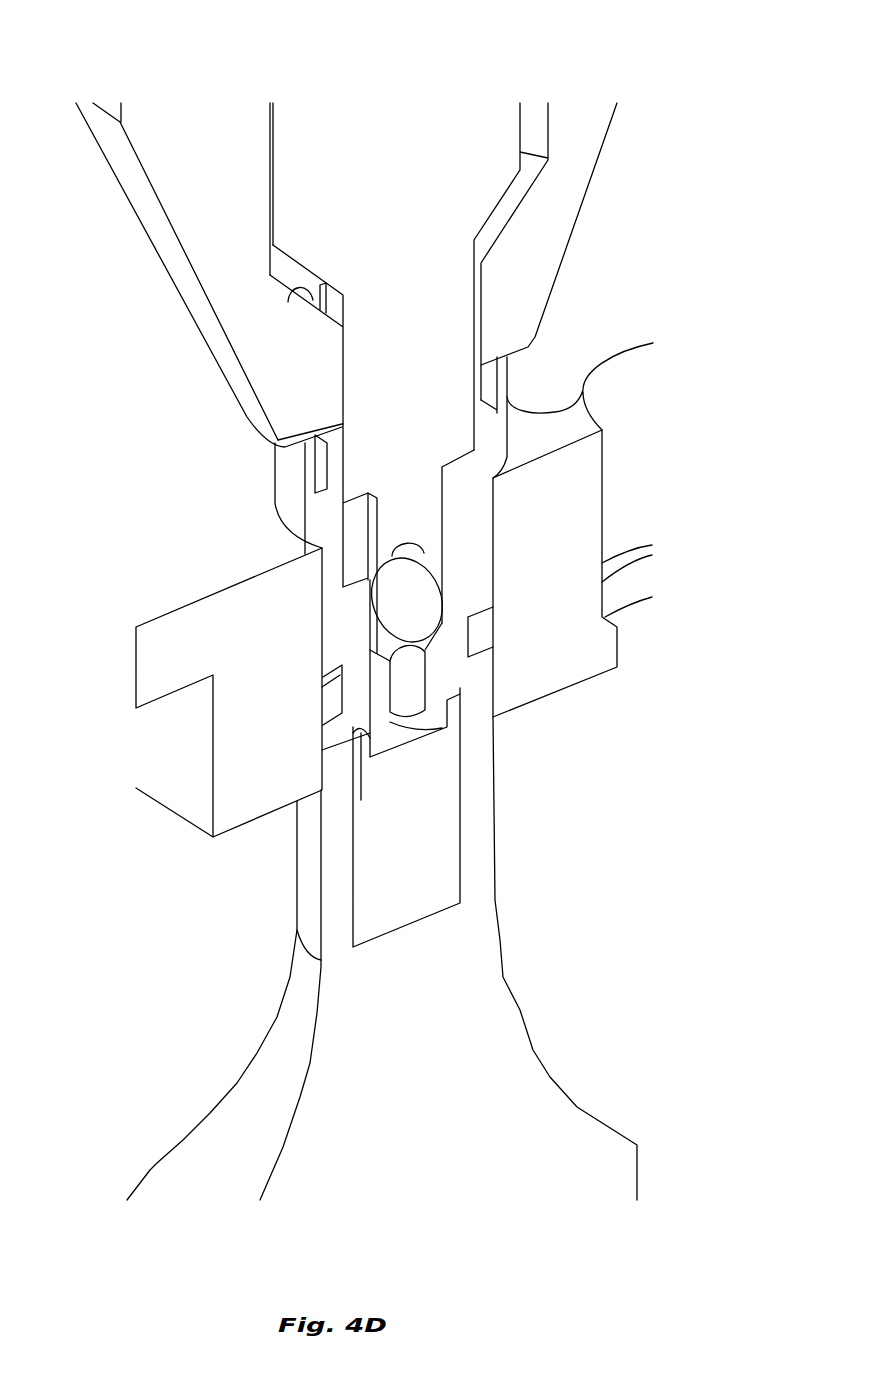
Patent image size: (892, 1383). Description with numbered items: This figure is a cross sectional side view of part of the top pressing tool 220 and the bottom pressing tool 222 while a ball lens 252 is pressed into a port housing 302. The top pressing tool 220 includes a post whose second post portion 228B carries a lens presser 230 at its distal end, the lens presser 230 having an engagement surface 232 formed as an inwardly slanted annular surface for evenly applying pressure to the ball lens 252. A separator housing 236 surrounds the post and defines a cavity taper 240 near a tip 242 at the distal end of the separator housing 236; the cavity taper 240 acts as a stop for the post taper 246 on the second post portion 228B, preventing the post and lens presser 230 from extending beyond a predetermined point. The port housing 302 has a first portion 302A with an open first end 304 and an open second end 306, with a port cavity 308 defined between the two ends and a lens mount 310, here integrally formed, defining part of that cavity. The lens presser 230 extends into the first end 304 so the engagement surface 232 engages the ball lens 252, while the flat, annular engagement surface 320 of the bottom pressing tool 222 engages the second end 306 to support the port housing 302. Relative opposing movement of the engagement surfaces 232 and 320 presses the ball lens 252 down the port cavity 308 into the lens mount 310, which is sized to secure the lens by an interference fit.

The top pressing tool 220 is at (255, 116).
The second post portion 228B is at (387, 323).
The cavity taper 240 is at (290, 290).
The post taper 246 is at (270, 275).
The open first end 304 is at (308, 452).
The lens presser 230 is at (352, 521).
The engagement surface 232 is at (443, 577).
The ball lens 252 is at (393, 603).
The lens mount 310 is at (368, 617).
The port cavity 308 is at (410, 682).
The open second end 306 is at (361, 735).
The engagement surface 320 is at (473, 690).
The bottom pressing tool 222 is at (517, 877).
The separator housing 236 is at (527, 265).
The tip 242 is at (518, 342).
The first portion 302A is at (582, 408).
The port housing 302 is at (505, 583).